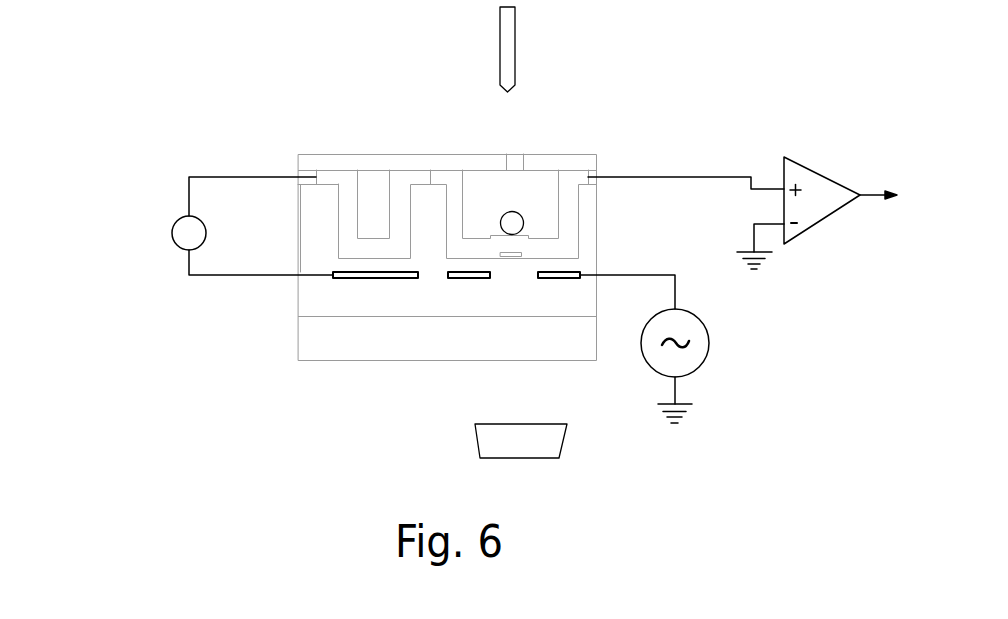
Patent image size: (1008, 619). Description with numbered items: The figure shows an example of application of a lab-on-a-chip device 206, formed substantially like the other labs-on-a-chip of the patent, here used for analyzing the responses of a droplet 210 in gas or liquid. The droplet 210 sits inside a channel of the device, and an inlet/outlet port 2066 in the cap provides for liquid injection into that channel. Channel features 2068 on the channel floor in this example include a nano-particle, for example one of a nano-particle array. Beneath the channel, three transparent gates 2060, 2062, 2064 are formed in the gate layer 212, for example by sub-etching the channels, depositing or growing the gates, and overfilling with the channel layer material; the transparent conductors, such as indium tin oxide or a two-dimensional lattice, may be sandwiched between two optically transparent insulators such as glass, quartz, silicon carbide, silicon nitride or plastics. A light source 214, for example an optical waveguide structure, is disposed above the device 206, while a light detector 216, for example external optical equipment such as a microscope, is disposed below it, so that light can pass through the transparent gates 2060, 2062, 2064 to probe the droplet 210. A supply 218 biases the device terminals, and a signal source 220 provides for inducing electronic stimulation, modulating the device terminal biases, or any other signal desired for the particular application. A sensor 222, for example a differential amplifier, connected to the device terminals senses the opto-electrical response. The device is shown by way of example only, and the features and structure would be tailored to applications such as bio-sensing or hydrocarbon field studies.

The lab-on-a-chip device 206 is at (236, 366).
The transparent gate 2060 is at (372, 279).
The transparent gate 2062 is at (460, 279).
The transparent gate 2064 is at (553, 279).
The inlet/outlet port 2066 is at (524, 168).
The channel features 2068 is at (522, 253).
The droplet 210 is at (522, 223).
The gate layer 212 is at (150, 275).
The light source 214 is at (500, 47).
The light detector 216 is at (475, 446).
The supply 218 is at (172, 238).
The signal source 220 is at (705, 328).
The sensor 222 is at (785, 157).